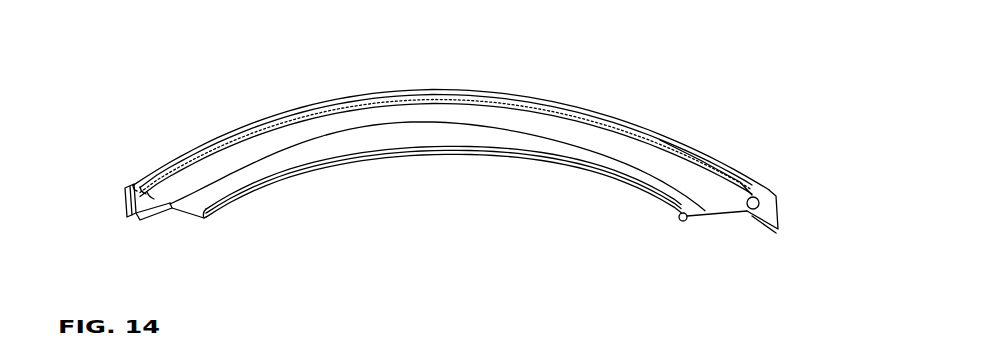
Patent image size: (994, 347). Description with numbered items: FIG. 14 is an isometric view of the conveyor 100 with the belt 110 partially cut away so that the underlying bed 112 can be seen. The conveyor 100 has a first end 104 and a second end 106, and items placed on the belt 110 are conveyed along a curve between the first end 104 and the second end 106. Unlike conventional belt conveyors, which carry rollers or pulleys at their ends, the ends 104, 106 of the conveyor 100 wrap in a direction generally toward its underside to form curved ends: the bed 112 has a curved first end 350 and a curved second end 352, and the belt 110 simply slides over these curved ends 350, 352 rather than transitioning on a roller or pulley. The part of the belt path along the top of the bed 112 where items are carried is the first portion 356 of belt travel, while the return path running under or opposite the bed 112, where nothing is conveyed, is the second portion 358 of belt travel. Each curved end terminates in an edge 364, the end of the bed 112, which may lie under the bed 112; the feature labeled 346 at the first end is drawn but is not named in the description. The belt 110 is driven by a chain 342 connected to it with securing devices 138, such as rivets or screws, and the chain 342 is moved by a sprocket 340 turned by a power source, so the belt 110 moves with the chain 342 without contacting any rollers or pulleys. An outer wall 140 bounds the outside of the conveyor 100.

The conveyor 100 is at (452, 160).
The first end 104 is at (174, 174).
The second end 106 is at (763, 233).
The belt 110 is at (288, 108).
The bed 112 is at (540, 145).
The securing devices 138 is at (685, 222).
The outer wall 140 is at (773, 203).
The sprocket 340 is at (157, 178).
The chain 342 is at (692, 157).
The end face 346 is at (127, 192).
The first end of the bed 350 is at (183, 225).
The second end of the bed 352 is at (703, 223).
The first portion of belt travel 356 is at (463, 109).
The second portion of belt travel 358 is at (470, 173).
The edge 364 is at (172, 207).